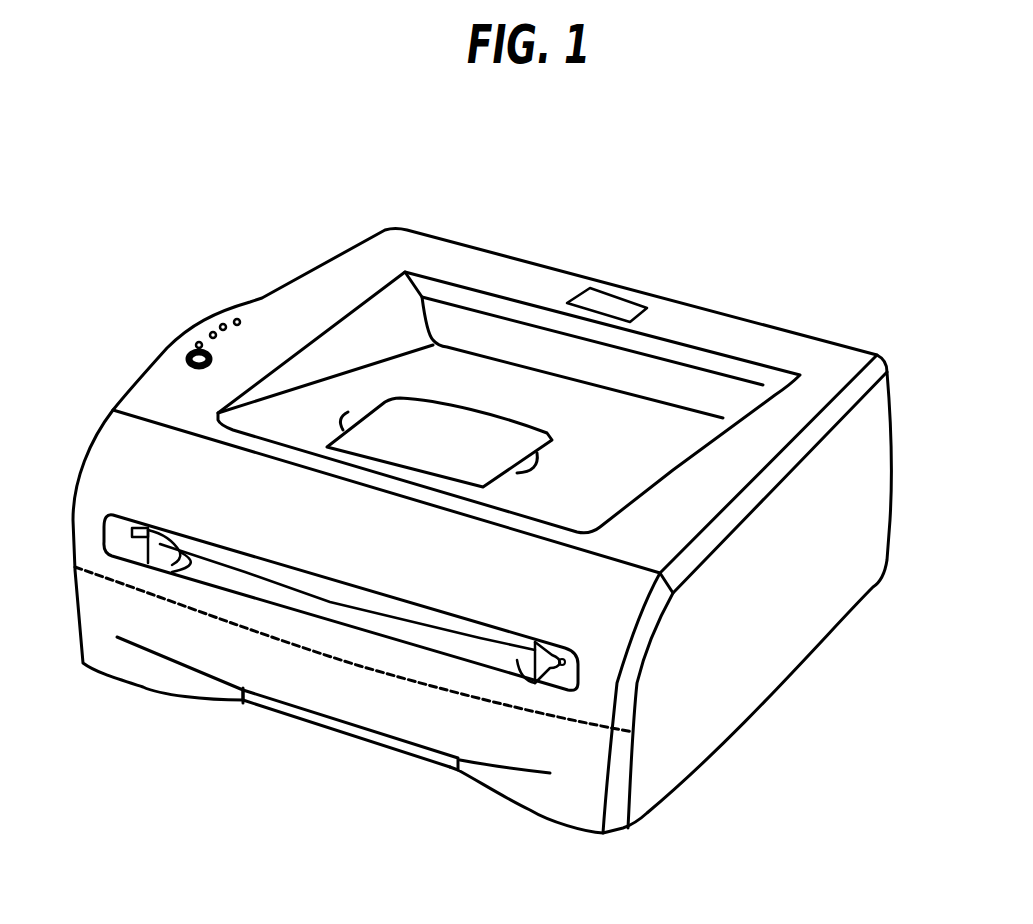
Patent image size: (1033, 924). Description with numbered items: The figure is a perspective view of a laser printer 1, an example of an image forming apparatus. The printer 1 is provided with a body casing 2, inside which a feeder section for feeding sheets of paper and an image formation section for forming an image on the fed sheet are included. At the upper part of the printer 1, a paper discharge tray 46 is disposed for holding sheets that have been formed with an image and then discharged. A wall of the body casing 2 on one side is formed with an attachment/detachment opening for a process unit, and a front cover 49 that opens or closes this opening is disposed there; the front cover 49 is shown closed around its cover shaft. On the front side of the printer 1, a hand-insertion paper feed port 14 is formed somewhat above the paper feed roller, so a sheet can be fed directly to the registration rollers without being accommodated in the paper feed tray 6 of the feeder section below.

The laser printer 1 is at (613, 252).
The body casing 2 is at (845, 507).
The paper discharge tray 46 is at (645, 432).
The front cover 49 is at (593, 597).
The hand-insertion paper feed port 14 is at (476, 642).
The paper feed tray 6 is at (570, 813).